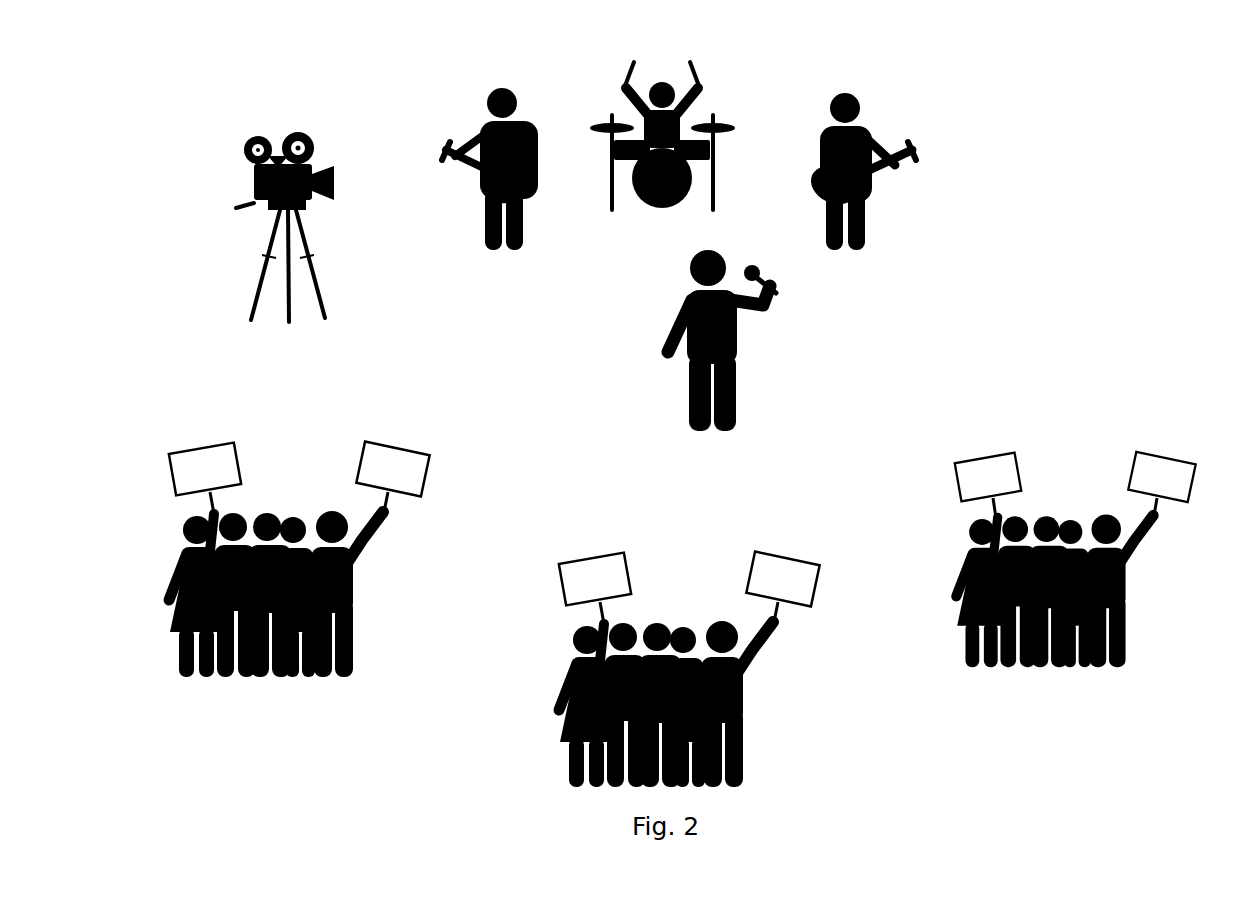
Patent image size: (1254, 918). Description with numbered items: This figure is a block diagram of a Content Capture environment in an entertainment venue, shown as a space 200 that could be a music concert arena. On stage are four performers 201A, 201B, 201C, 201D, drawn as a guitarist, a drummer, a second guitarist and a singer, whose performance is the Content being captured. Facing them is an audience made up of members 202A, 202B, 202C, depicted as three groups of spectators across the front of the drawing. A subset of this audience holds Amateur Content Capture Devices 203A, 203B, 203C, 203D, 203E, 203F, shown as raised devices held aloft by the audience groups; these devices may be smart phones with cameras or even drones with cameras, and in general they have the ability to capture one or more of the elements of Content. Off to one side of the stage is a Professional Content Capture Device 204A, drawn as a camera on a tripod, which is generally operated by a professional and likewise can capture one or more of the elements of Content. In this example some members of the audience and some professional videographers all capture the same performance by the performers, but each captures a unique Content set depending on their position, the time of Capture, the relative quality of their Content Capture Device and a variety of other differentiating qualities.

The space 200 is at (1102, 158).
The performer 201A is at (448, 116).
The performer 201B is at (734, 96).
The performer 201C is at (892, 208).
The performer 201D is at (768, 374).
The audience member 202A is at (178, 692).
The audience member 202B is at (775, 706).
The audience member 202C is at (1050, 678).
The Amateur Content Capture Device 203A is at (195, 441).
The Amateur Content Capture Device 203B is at (405, 443).
The Amateur Content Capture Device 203C is at (584, 552).
The Amateur Content Capture Device 203D is at (809, 560).
The Amateur Content Capture Device 203E is at (1000, 450).
The Amateur Content Capture Device 203F is at (1170, 452).
The Professional Content Capture Device 204A is at (226, 190).